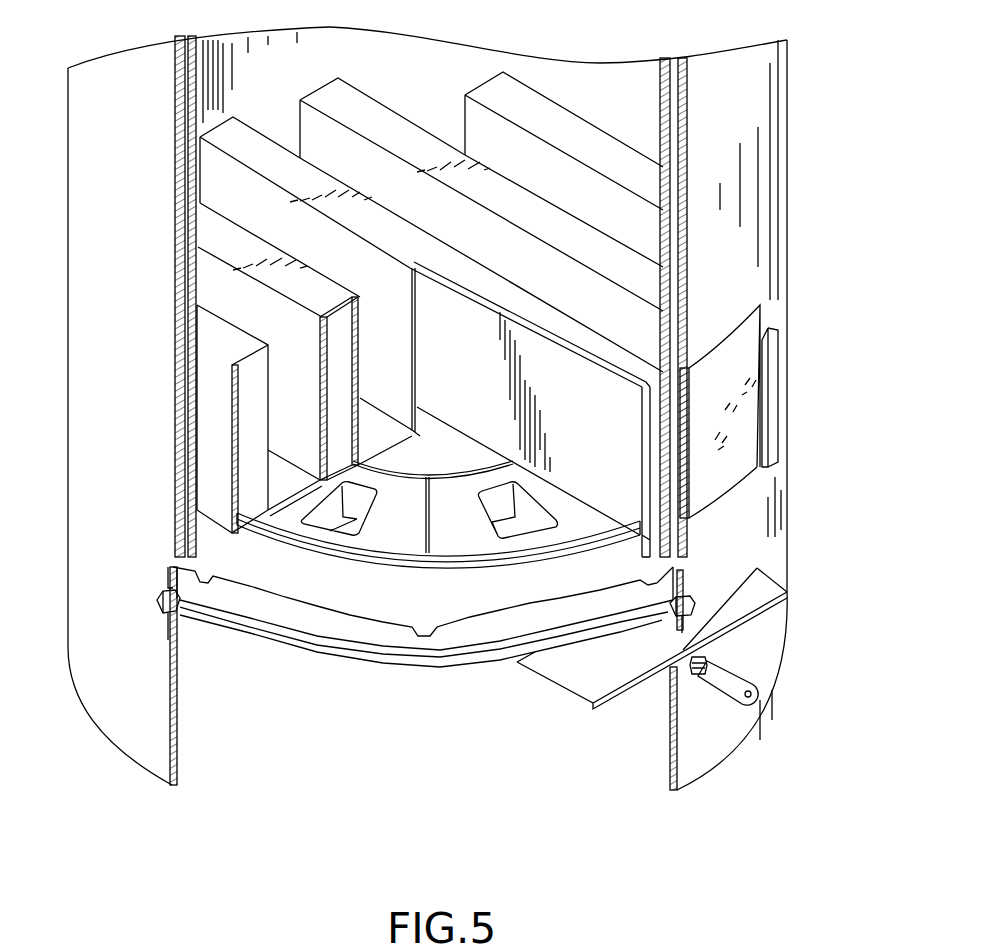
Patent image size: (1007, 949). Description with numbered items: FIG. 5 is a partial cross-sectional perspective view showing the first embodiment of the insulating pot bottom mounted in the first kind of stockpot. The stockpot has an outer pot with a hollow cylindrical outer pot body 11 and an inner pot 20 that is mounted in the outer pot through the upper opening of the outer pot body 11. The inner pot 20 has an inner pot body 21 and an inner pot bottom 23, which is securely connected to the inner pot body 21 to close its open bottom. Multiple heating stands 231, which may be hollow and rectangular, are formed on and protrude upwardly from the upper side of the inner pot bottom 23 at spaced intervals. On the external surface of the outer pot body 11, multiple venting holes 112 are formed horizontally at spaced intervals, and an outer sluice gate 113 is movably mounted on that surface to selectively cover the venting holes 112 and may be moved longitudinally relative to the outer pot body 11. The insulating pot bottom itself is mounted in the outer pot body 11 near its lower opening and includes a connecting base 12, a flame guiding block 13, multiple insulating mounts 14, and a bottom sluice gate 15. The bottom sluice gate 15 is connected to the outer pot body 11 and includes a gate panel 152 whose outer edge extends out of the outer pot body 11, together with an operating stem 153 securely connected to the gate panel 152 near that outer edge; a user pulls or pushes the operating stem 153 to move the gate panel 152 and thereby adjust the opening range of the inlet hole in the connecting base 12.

The outer pot body 11 is at (722, 768).
The connecting base 12 is at (310, 665).
The flame guiding block 13 is at (445, 435).
The insulating mounts 14 is at (569, 493).
The bottom sluice gate 15 is at (646, 662).
The gate panel 152 is at (550, 696).
The operating stem 153 is at (758, 698).
The inner pot 20 is at (556, 58).
The inner pot body 21 is at (678, 122).
The inner pot bottom 23 is at (185, 343).
The heating stands 231 is at (293, 338).
The venting holes 112 is at (753, 417).
The outer sluice gate 113 is at (775, 363).